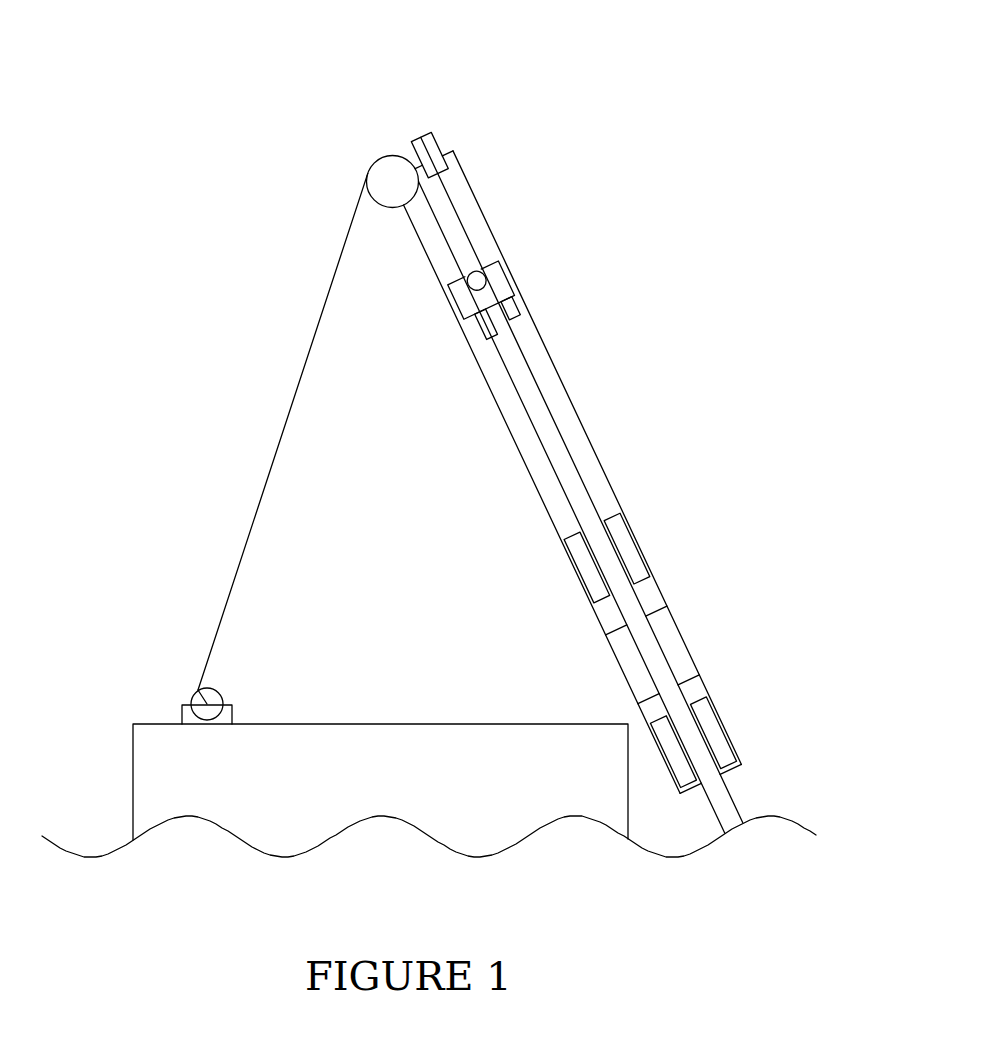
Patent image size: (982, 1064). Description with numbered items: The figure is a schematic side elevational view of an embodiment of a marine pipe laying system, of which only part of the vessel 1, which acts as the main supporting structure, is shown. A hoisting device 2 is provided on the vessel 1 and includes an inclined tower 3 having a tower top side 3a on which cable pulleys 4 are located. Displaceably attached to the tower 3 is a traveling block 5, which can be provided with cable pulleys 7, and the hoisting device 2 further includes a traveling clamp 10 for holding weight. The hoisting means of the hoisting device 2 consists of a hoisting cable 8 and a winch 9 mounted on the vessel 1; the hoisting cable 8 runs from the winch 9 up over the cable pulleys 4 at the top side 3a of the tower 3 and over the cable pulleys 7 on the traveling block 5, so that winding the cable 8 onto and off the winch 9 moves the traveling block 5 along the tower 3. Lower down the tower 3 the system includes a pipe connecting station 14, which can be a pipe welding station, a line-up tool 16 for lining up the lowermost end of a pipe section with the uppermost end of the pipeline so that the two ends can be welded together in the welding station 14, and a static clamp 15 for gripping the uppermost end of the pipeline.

The vessel 1 is at (418, 735).
The hoisting device 2 is at (353, 96).
The tower 3 is at (578, 410).
The tower top side 3a is at (458, 153).
The cable pulleys 4 is at (437, 136).
The traveling block 5 is at (460, 305).
The cable pulleys 7 is at (487, 270).
The hoisting cable 8 is at (300, 378).
The winch 9 is at (198, 690).
The traveling clamp 10 is at (505, 300).
The pipe connecting station 14 is at (673, 643).
The static clamp 15 is at (717, 732).
The line-up tool 16 is at (630, 547).